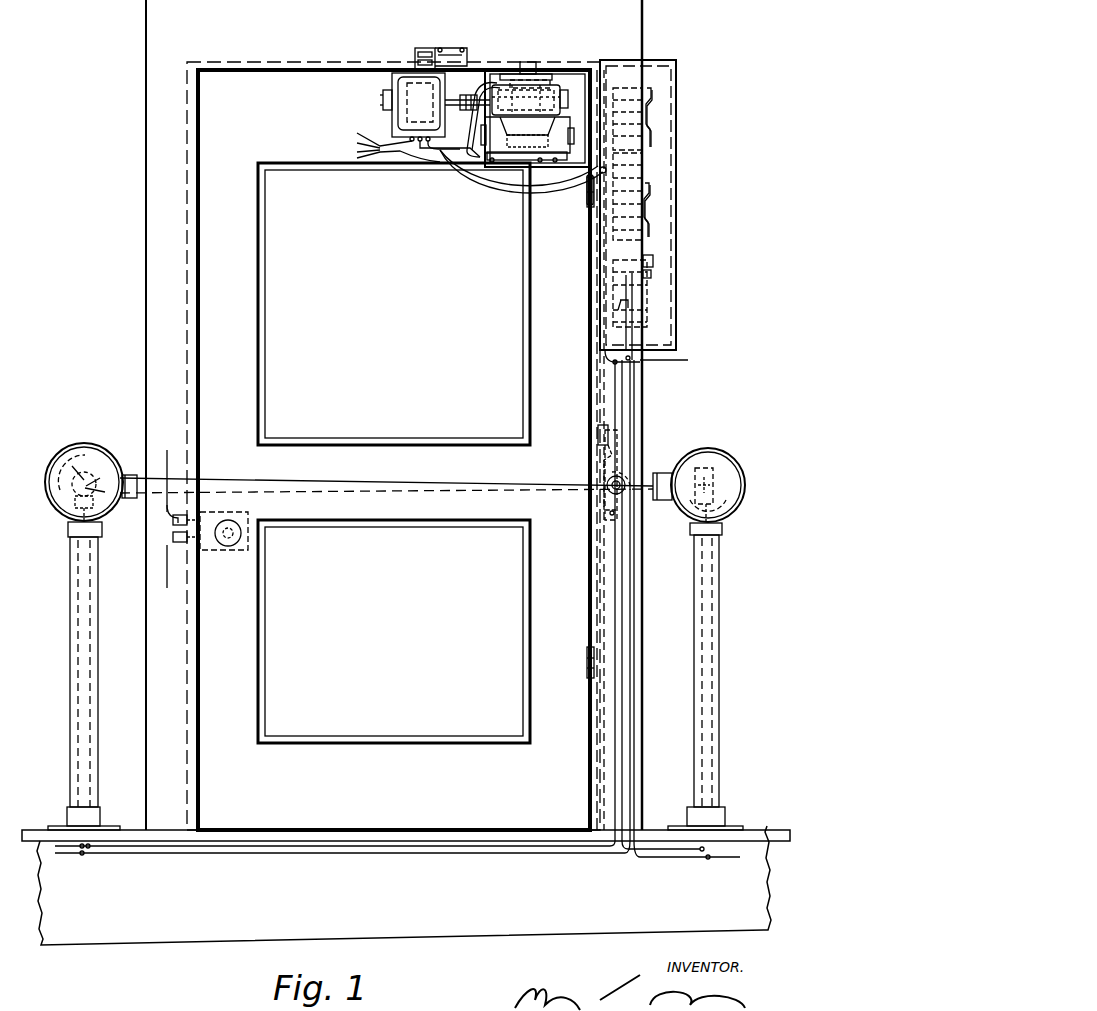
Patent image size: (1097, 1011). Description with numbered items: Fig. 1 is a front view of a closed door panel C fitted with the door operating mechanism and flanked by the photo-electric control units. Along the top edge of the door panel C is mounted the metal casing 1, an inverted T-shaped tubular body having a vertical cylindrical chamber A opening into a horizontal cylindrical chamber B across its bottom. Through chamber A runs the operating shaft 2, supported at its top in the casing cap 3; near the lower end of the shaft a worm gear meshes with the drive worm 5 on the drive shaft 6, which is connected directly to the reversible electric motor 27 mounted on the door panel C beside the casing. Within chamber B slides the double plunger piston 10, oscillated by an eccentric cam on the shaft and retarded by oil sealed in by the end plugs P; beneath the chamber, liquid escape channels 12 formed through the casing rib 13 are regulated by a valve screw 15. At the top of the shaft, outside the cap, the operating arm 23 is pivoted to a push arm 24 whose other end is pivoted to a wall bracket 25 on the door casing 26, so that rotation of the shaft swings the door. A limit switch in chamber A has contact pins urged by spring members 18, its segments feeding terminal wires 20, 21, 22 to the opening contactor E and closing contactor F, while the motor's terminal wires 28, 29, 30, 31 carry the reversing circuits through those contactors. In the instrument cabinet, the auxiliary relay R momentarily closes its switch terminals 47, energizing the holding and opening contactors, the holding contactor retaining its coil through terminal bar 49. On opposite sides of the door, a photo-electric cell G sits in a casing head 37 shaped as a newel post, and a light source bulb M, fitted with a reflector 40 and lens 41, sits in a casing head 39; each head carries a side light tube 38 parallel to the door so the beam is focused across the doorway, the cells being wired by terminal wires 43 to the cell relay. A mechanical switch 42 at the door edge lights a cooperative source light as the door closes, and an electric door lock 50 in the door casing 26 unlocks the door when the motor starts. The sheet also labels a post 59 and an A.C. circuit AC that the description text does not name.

The casing 1 is at (562, 89).
The operating shaft 2 is at (530, 62).
The casing cap 3 is at (526, 113).
The drive worm 5 is at (540, 90).
The drive shaft 6 is at (482, 72).
The double plunger piston 10 is at (574, 137).
The liquid escape channels 12 is at (536, 165).
The casing rib 13 is at (555, 165).
The valve screw 15 is at (494, 165).
The spring member 18 is at (567, 156).
The electric terminal wire 20 is at (470, 112).
The electric terminal wire 21 is at (452, 127).
The electric terminal wire 22 is at (453, 135).
The operating arm 23 is at (505, 74).
The push arm 24 is at (425, 48).
The wall bracket 25 is at (450, 48).
The door casing 26 is at (642, 36).
The electric motor 27 is at (401, 125).
The terminal wire 28 is at (377, 138).
The terminal wire 29 is at (361, 144).
The terminal wire 30 is at (391, 153).
The terminal wire 31 is at (653, 95).
The casing head 37 is at (745, 490).
The side light tube 38 is at (130, 475).
The casing head 39 is at (80, 443).
The reflector 40 is at (64, 487).
The lens 41 is at (128, 498).
The mechanical switch 42 is at (603, 434).
The terminal wires 43 is at (712, 548).
The switch terminals 47 is at (650, 292).
The terminal bar 49 is at (651, 196).
The electric door lock 50 is at (172, 545).
The post 59 is at (70, 556).
The vertical cylindrical chamber A is at (555, 93).
The horizontal cylindrical chamber B is at (523, 177).
The door panel C is at (207, 110).
The opening contactor E is at (627, 119).
The closing contactor F is at (627, 196).
The photo-electric cell G is at (713, 478).
The light source bulb M is at (92, 470).
The end plug P is at (470, 170).
The auxiliary relay instrument R is at (630, 310).
The A.C. circuit AC is at (695, 361).